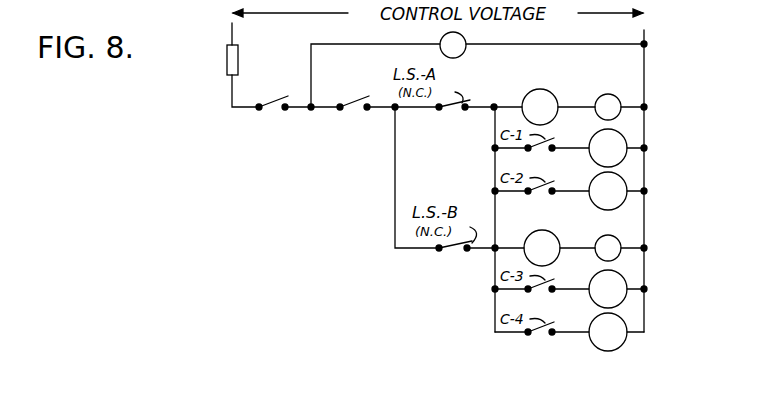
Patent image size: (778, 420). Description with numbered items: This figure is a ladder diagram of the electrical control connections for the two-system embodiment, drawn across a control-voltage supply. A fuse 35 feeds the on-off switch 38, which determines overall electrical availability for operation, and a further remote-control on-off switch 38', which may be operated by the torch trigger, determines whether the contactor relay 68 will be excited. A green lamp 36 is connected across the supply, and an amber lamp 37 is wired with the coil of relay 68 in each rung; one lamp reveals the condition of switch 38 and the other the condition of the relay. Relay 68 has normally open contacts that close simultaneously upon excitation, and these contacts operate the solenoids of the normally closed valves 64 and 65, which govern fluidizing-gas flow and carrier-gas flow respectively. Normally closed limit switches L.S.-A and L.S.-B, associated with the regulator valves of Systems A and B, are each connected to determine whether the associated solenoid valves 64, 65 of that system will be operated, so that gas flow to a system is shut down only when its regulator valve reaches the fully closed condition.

The fuse 35 is at (227, 62).
The on-off switch 38 is at (297, 92).
The remote on-off switch 38' is at (387, 92).
The green lamp 36 is at (464, 53).
The contactor relay 68 is at (531, 93).
The amber lamp 37 is at (610, 95).
The normally closed valve 64 is at (569, 218).
The normally closed valve 65 is at (569, 261).